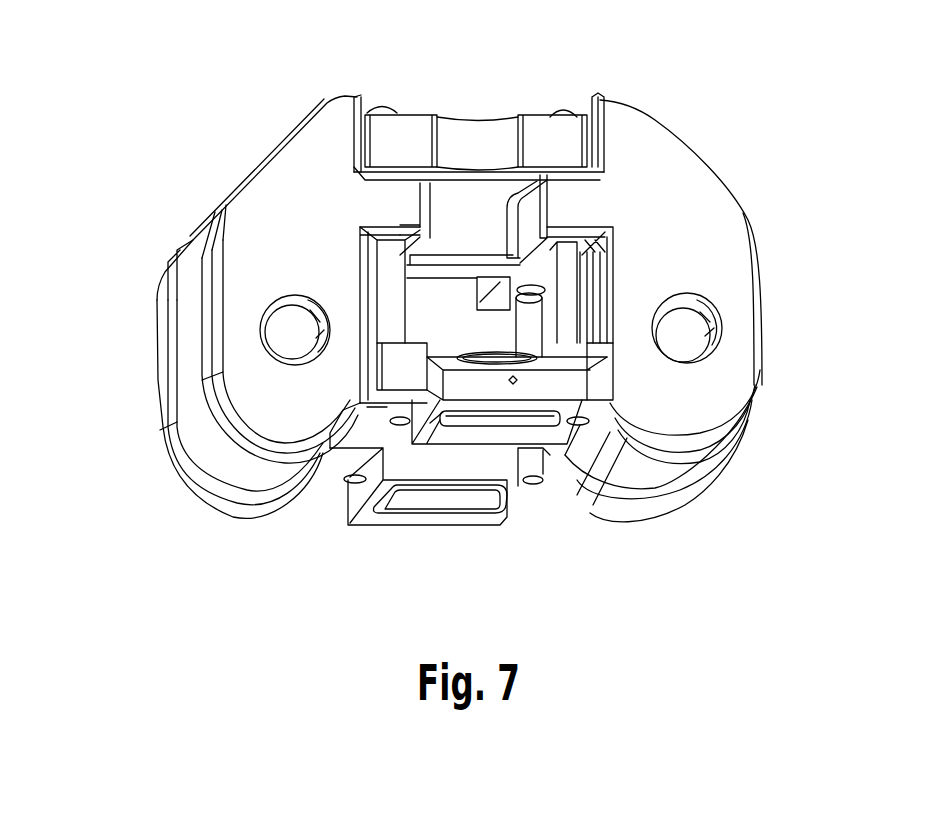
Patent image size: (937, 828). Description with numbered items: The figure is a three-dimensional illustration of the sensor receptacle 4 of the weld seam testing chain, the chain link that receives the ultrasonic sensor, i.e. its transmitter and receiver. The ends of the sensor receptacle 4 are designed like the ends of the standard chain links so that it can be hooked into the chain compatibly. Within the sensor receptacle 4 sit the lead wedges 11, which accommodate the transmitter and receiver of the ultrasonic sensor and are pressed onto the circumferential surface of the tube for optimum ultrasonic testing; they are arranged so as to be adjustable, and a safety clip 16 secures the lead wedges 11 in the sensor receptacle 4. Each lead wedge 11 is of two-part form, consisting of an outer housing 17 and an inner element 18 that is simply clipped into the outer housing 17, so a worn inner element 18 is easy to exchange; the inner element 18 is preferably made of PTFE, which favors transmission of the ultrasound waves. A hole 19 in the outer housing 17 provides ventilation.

The sensor receptacle 4 is at (744, 196).
The safety clip 16 is at (505, 114).
The hole 19 is at (569, 378).
The outer housing 17 is at (622, 405).
The inner element 18 is at (504, 530).
The lead wedge 11 is at (569, 514).